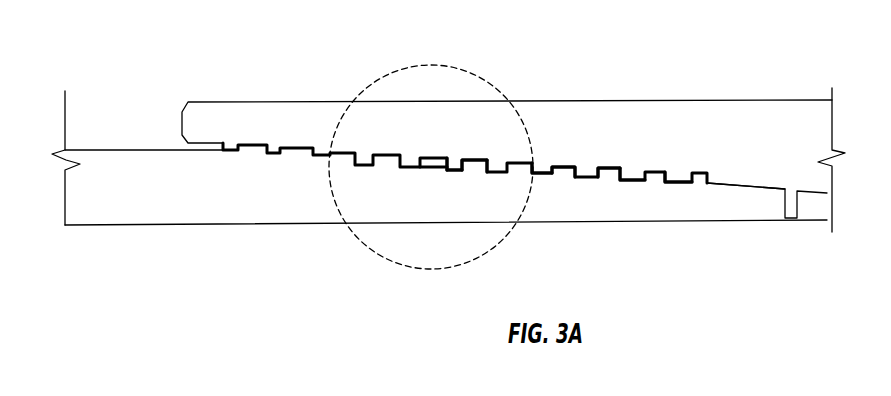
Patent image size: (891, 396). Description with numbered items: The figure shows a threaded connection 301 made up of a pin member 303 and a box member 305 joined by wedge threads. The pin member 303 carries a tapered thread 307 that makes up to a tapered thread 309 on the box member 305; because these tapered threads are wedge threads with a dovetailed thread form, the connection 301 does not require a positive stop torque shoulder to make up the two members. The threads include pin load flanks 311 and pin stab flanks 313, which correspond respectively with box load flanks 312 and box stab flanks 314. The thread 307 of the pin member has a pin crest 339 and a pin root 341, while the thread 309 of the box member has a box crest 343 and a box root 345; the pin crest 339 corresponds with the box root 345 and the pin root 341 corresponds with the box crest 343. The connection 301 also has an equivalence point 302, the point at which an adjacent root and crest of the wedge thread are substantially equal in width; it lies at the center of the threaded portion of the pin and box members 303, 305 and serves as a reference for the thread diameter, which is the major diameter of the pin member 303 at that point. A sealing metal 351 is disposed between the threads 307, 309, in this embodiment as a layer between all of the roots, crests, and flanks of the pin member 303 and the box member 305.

The threaded connection 301 is at (251, 60).
The pin member 303 is at (818, 154).
The box member 305 is at (223, 201).
The sealing metal 351 is at (253, 143).
The box crest 343 is at (452, 160).
The box root 345 is at (476, 160).
The box load flank 312 is at (551, 165).
The pin stab flank 313 is at (618, 173).
The box stab flank 314 is at (621, 175).
The tapered thread 309 is at (675, 173).
The equivalence point 302 is at (447, 170).
The pin root 341 is at (457, 171).
The pin crest 339 is at (473, 168).
The pin load flank 311 is at (560, 176).
The tapered thread 307 is at (699, 186).